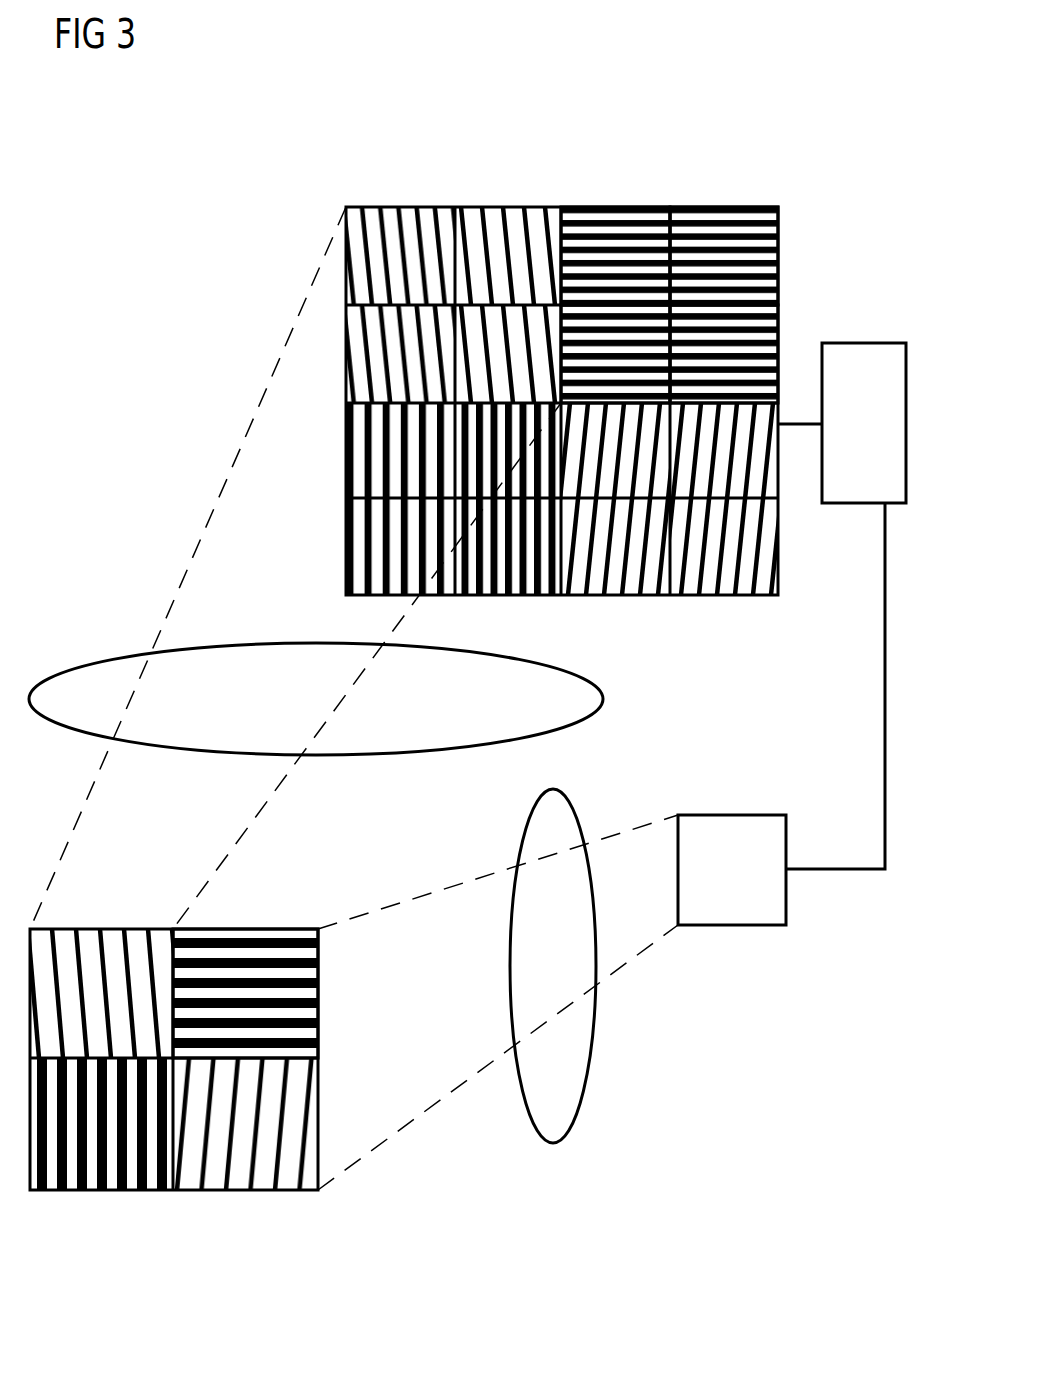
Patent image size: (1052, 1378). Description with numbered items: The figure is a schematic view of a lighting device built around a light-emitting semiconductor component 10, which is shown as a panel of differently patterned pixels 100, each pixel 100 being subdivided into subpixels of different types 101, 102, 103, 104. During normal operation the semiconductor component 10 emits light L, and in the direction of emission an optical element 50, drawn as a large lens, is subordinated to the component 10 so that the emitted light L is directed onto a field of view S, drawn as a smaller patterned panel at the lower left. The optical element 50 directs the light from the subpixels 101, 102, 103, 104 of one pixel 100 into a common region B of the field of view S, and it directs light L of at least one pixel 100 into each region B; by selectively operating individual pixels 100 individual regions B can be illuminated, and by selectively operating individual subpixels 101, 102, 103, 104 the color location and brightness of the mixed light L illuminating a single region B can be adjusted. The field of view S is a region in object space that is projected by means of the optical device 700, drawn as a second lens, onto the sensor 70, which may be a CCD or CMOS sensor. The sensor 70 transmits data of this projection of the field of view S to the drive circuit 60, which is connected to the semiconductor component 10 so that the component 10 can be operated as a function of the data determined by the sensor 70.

The light-emitting semiconductor component 10 is at (523, 347).
The pixel 100 is at (673, 251).
The subpixel 101 is at (588, 243).
The subpixel 102 is at (622, 357).
The subpixel 103 is at (707, 243).
The subpixel 104 is at (724, 280).
The optical element 50 is at (122, 672).
The drive circuit 60 is at (865, 357).
The sensor 70 is at (749, 908).
The optical device 700 is at (564, 1072).
The light L is at (354, 698).
The region B is at (267, 970).
The field of view S is at (174, 1064).